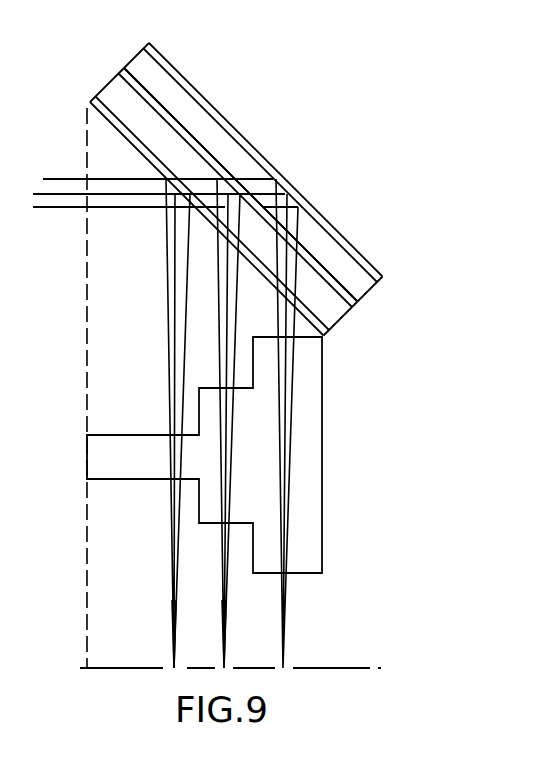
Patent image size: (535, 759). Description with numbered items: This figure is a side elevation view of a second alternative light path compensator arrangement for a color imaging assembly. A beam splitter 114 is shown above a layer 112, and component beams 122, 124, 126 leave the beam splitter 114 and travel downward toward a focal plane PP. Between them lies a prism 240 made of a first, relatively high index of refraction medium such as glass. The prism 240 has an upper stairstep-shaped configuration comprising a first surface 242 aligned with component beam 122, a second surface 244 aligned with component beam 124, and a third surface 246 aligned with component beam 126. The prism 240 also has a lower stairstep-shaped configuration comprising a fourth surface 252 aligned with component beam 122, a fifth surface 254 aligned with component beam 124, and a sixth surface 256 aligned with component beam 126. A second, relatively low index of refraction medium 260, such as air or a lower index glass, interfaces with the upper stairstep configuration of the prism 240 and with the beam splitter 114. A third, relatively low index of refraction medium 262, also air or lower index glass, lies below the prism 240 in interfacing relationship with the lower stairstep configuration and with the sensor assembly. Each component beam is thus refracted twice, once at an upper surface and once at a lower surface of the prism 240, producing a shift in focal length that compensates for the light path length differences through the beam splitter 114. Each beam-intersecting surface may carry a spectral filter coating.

The planar layer 112 is at (45, 193).
The beam splitter 114 is at (265, 157).
The component beam 122 is at (287, 378).
The component beam 124 is at (226, 372).
The component beam 126 is at (185, 393).
The prism 240 is at (328, 463).
The first surface 242 is at (323, 319).
The second surface 244 is at (208, 388).
The third surface 246 is at (173, 435).
The fourth surface 252 is at (307, 575).
The fifth surface 254 is at (242, 527).
The sixth surface 256 is at (139, 480).
The second medium 260 is at (248, 297).
The third medium 262 is at (192, 619).
The focal plane PP is at (328, 667).